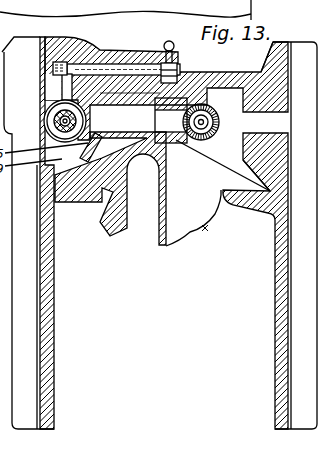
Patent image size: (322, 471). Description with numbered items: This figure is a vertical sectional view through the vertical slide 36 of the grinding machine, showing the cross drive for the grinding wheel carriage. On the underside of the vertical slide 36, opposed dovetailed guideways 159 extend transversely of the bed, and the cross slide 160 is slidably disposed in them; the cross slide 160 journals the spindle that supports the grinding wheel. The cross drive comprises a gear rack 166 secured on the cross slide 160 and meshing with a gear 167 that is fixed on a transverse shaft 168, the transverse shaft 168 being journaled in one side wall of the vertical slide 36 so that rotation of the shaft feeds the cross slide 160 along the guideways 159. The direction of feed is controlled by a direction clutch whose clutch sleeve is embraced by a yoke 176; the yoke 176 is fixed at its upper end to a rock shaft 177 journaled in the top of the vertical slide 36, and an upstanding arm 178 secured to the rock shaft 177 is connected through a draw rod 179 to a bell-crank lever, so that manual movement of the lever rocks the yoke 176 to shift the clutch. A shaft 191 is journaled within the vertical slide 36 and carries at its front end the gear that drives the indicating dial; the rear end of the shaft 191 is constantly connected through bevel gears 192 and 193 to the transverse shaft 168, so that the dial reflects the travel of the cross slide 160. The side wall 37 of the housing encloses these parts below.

The vertical slide 36 is at (73, 44).
The housing side wall 37 is at (54, 318).
The dovetailed guideways 159 is at (87, 201).
The cross slide 160 is at (210, 229).
The gear rack 166 is at (178, 142).
The gear 167 is at (204, 84).
The transverse shaft 168 is at (145, 165).
The yoke 176 is at (62, 82).
The rock shaft 177 is at (115, 66).
The upstanding arm 178 is at (171, 62).
The draw rod 179 is at (178, 36).
The shaft 191 is at (209, 122).
The bevel gear 192 is at (230, 76).
The bevel gear 193 is at (223, 159).